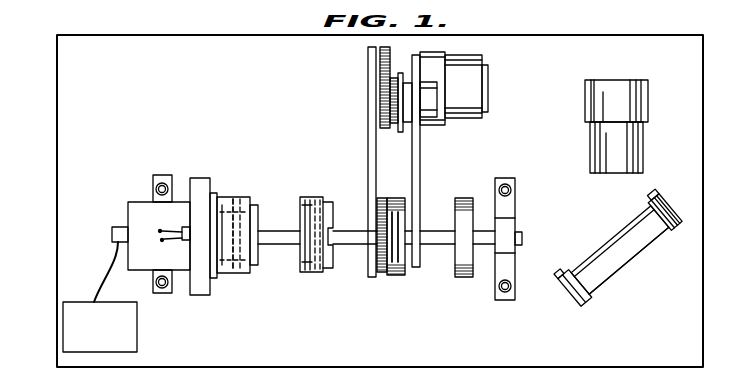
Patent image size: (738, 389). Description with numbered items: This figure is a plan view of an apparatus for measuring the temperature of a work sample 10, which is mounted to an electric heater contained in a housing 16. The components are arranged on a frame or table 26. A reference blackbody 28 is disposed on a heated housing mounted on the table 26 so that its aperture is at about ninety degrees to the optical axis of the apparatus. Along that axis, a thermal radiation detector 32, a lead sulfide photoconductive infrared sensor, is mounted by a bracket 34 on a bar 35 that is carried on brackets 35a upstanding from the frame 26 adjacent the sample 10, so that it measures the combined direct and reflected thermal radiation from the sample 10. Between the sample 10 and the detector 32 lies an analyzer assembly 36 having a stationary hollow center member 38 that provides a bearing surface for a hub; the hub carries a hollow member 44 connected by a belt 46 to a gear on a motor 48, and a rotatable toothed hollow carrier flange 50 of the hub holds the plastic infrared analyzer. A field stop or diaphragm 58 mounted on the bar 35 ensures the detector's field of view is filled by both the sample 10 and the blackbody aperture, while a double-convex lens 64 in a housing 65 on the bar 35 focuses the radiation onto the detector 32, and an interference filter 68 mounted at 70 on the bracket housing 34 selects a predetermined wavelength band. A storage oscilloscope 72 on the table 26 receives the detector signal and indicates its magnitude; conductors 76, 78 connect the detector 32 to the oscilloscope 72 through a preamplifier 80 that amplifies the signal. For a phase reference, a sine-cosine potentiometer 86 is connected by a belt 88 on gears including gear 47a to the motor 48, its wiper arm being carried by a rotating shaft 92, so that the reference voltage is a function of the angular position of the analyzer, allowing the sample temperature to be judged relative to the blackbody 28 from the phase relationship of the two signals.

The work sample 10 is at (612, 240).
The housing 16 is at (628, 262).
The frame or table 26 is at (263, 82).
The blackbody 28 is at (645, 145).
The detector 32 is at (187, 226).
The bracket 34 is at (198, 180).
The bar 35 is at (283, 246).
The brackets 35a is at (153, 180).
The analyzer assembly 36 is at (360, 200).
The stationary hollow center member 38 is at (397, 277).
The hollow member 44 is at (405, 276).
The belt 46 is at (377, 173).
The gear 47a is at (392, 126).
The motor 48 is at (480, 91).
The rotatable toothed hollow carrier flange 50 is at (381, 275).
The field stop or diaphragm 58 is at (465, 278).
The lens 64 is at (318, 200).
The housing 65 is at (312, 273).
The filter 68 is at (243, 200).
The mounting 70 is at (243, 274).
The oscilloscope 72 is at (137, 325).
The conductor 76 is at (163, 226).
The conductor 78 is at (164, 241).
The preamplifier 80 is at (140, 210).
The potentiometer 86 is at (430, 118).
The belt 88 is at (392, 76).
The rotating shaft 92 is at (410, 108).